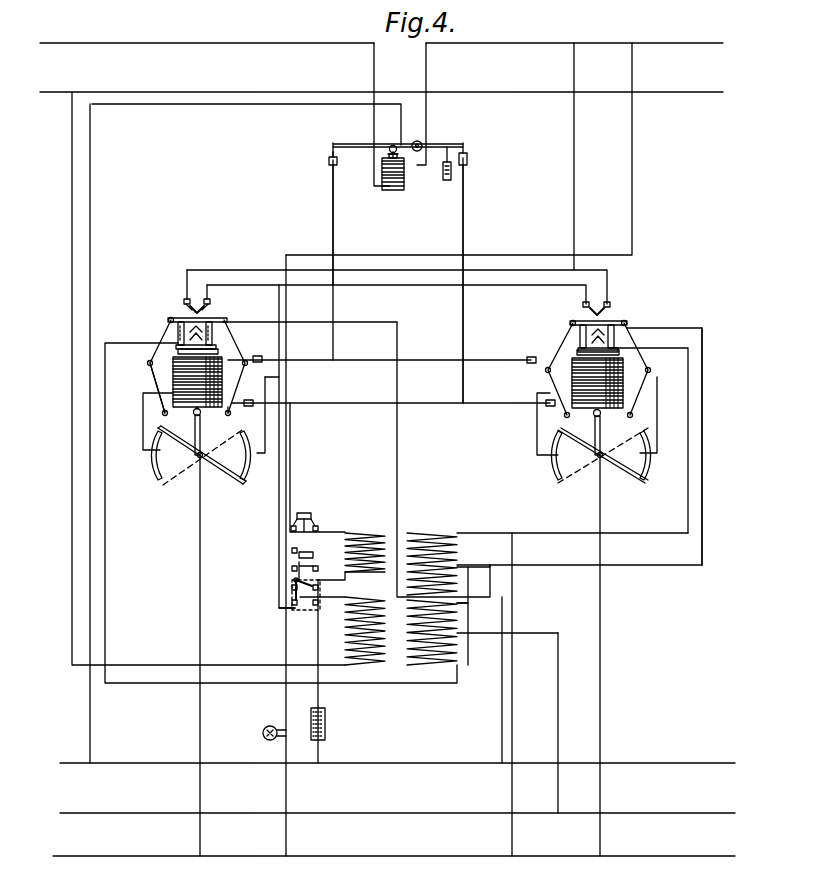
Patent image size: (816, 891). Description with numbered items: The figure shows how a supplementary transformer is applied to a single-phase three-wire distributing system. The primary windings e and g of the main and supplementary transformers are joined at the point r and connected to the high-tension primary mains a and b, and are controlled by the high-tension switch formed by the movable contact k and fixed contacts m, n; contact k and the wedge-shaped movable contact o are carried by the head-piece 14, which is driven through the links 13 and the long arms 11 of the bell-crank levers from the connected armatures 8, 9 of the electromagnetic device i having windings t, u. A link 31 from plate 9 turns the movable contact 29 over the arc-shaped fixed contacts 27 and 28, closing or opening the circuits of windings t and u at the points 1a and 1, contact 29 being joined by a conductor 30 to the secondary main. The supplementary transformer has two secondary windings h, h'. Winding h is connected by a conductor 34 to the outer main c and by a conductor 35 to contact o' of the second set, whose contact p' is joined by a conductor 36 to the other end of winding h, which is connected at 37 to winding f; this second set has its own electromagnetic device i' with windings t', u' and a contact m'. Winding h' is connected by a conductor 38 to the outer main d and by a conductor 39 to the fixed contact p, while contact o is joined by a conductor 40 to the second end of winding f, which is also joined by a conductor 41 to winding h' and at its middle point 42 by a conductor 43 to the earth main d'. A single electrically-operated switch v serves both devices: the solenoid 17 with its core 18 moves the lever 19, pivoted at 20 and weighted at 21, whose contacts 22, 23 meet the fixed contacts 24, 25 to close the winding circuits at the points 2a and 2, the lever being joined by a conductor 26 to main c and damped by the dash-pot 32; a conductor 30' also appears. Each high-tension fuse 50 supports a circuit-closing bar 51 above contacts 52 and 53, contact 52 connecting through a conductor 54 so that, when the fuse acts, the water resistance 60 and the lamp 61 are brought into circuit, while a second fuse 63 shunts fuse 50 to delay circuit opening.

The high-tension primary main a is at (300, 43).
The high-tension primary main b is at (381, 82).
The outer secondary main c is at (350, 856).
The outer secondary main d is at (397, 753).
The middle or earth main d' is at (397, 802).
The conductor 26 is at (402, 120).
The conductor 40 is at (106, 552).
The conductor 30 is at (189, 655).
The conductor 54 is at (285, 790).
The lever 19 is at (375, 136).
The weight 21 is at (422, 144).
The pivot 20 is at (395, 146).
The movable contact 22 is at (332, 146).
The second circuit point of winding t 2a is at (328, 159).
The insulated fixed contact 24 is at (332, 163).
The movable contact 23 is at (466, 146).
The insulated fixed contact 25 is at (468, 158).
The second circuit point of winding u 2 is at (478, 273).
The iron core 18 is at (388, 155).
The electrically-operated switch v is at (386, 160).
The solenoid 17 is at (393, 190).
The dash-pot 32 is at (447, 180).
The electromagnetic device i is at (197, 378).
The upper head-piece 14 is at (226, 318).
The movable contact o is at (210, 335).
The fixed contact p is at (163, 330).
The movable contact k is at (186, 308).
The fixed contact m is at (177, 288).
The fixed contact n is at (214, 295).
The links 13 is at (157, 348).
The movable iron plate or armature 8 is at (153, 362).
The winding t is at (149, 388).
The winding u is at (152, 421).
The long arms of bell-crank levers 11 is at (150, 392).
The movable iron plate or armature 9 is at (188, 421).
The link 31 is at (200, 425).
The movable contact 29 is at (202, 455).
The arc-shaped fixed contact 28 is at (144, 455).
The arc-shaped fixed contact 27 is at (256, 455).
The circuit point of winding u 1 is at (150, 461).
The circuit point of winding t 1a is at (252, 488).
The electromagnetic device i' is at (597, 379).
The contact p' is at (596, 367).
The contact o' is at (640, 445).
The contact m' is at (596, 308).
The winding t' is at (645, 365).
The winding u' is at (596, 406).
The conductor 36 is at (704, 400).
The conductor 30' is at (617, 655).
The primary winding of supplementary transformer g is at (351, 547).
The secondary winding of supplementary transformer h is at (432, 554).
The primary winding of main transformer e is at (342, 631).
The secondary winding of main transformer f is at (425, 632).
The secondary winding of supplementary transformer h' is at (471, 615).
The conductor 39 is at (398, 428).
The conductor 35 is at (572, 523).
The connection point 37 is at (490, 565).
The conductor 34 is at (513, 585).
The middle point of winding f 42 is at (468, 624).
The conductor 41 is at (468, 650).
The conductor 43 is at (559, 673).
The conductor 38 is at (501, 726).
The second fuse 63 is at (306, 510).
The high-tension fuse 50 is at (318, 528).
The circuit-closing bar 51 is at (311, 552).
The connection point r is at (292, 585).
The contact 52 is at (293, 606).
The contact 53 is at (318, 557).
The water resistance 60 is at (326, 724).
The incandescent electric lamp 61 is at (263, 733).